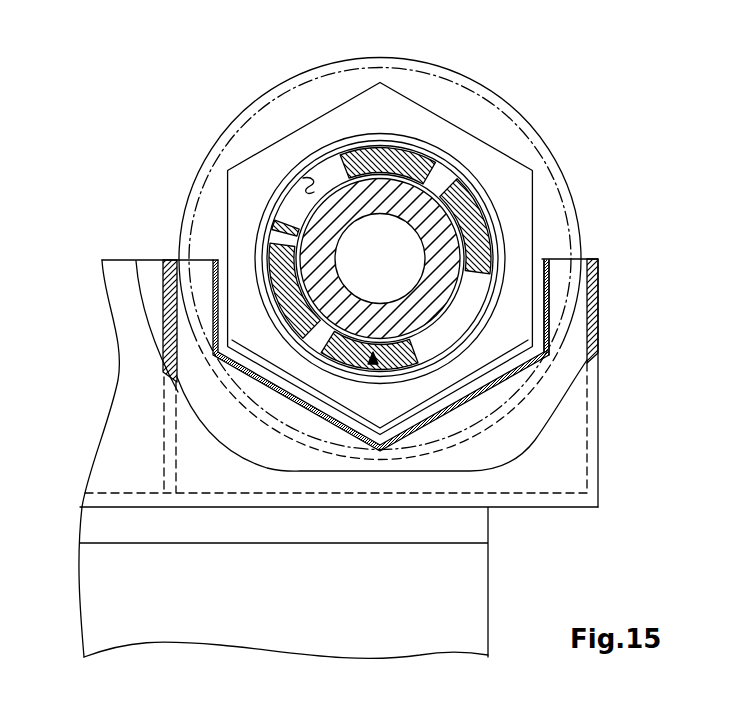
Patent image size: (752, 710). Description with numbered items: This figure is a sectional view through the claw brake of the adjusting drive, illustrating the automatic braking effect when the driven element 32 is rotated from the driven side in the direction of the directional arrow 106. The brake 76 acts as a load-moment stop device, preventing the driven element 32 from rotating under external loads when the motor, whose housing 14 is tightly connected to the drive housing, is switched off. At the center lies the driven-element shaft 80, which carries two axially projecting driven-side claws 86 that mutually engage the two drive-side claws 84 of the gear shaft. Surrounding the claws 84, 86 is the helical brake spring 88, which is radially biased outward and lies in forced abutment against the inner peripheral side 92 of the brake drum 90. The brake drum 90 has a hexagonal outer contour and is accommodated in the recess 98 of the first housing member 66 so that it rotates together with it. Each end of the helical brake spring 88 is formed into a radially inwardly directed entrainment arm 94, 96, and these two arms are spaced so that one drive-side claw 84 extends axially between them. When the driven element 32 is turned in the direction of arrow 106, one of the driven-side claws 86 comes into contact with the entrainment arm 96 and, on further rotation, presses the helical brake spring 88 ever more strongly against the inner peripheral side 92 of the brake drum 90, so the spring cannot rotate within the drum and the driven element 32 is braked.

The housing 14 is at (157, 588).
The driven element 32 is at (612, 152).
The first housing member 66 is at (562, 470).
The brake 76 is at (168, 162).
The driven-element shaft 80 is at (403, 200).
The claws 84 is at (462, 185).
The claws 86 is at (398, 160).
The helical brake spring 88 is at (266, 240).
The brake drum 90 is at (473, 150).
The inner peripheral side 92 is at (290, 212).
The entrainment arm 94 is at (306, 181).
The entrainment arm 96 is at (330, 414).
The recess 98 is at (546, 262).
The directional arrow 106 is at (373, 358).